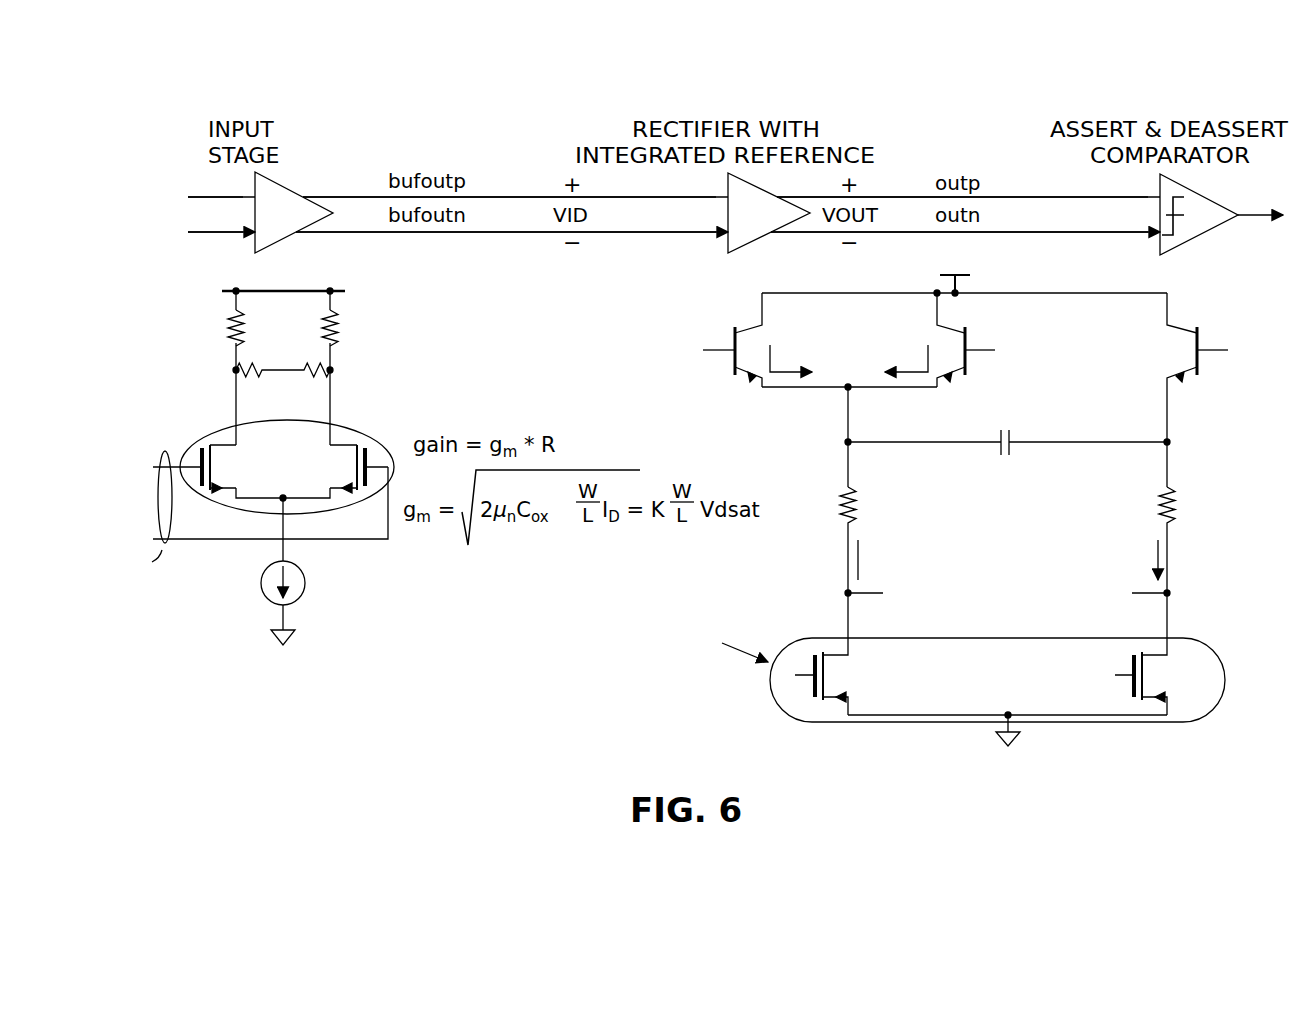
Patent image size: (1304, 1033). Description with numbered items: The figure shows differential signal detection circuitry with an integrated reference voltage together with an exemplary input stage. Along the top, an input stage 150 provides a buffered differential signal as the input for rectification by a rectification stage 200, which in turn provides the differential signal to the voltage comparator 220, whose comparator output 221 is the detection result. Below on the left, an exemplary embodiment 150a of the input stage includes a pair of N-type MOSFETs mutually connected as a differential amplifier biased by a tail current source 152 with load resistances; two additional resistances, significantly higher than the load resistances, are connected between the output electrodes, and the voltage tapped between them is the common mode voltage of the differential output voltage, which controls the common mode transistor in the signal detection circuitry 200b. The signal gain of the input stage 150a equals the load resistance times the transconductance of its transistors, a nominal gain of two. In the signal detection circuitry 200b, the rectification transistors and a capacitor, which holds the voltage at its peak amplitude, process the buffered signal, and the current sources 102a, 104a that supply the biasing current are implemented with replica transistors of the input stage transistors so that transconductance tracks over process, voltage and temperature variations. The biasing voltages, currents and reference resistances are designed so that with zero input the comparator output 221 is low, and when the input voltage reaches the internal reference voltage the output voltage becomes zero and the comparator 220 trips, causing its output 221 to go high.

The input stage 150 is at (310, 188).
The exemplary embodiment of the input stage 150a is at (249, 466).
The tail current source 152 is at (261, 583).
The rectification stage 200 is at (728, 243).
The signal detection circuitry 200b is at (1034, 535).
The voltage comparator 220 is at (1204, 236).
The comparator output 221 is at (1258, 214).
The current source 102a is at (812, 675).
The current source 104a is at (1128, 675).